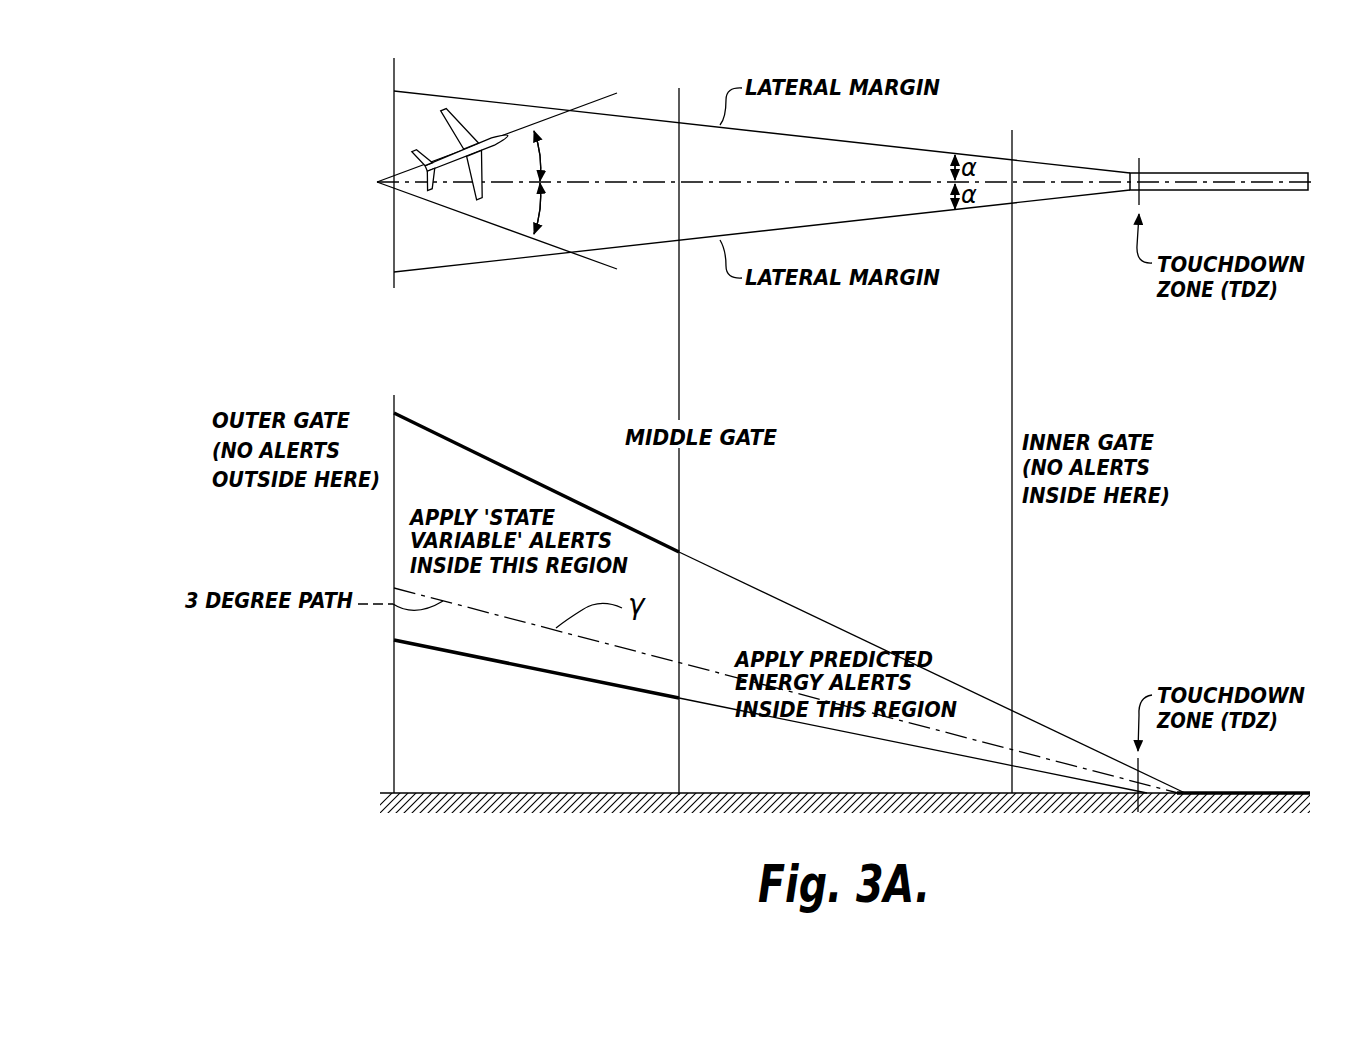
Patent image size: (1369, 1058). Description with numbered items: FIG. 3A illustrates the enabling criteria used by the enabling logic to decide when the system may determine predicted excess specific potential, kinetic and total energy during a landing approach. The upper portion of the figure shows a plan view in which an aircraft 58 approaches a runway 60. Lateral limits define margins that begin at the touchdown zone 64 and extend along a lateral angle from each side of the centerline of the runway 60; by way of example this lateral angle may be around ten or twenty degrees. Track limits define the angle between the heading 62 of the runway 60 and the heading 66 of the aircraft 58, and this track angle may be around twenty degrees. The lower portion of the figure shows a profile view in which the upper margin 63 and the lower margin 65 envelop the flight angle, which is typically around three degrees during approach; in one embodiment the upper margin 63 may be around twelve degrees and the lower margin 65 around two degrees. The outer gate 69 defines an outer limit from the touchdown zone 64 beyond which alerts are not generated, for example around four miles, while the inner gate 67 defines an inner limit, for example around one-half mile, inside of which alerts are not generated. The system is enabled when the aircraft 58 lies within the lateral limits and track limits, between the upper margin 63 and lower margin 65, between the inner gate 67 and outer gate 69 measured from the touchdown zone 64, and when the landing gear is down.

The aircraft 58 is at (483, 124).
The runway 60 is at (1074, 139).
The heading of the runway 62 is at (740, 186).
The upper margin 63 is at (428, 430).
The touchdown zone 64 is at (1221, 159).
The lower margin 65 is at (631, 690).
The heading of the aircraft 66 is at (594, 101).
The inner gate 67 is at (1012, 667).
The outer gate 69 is at (393, 682).